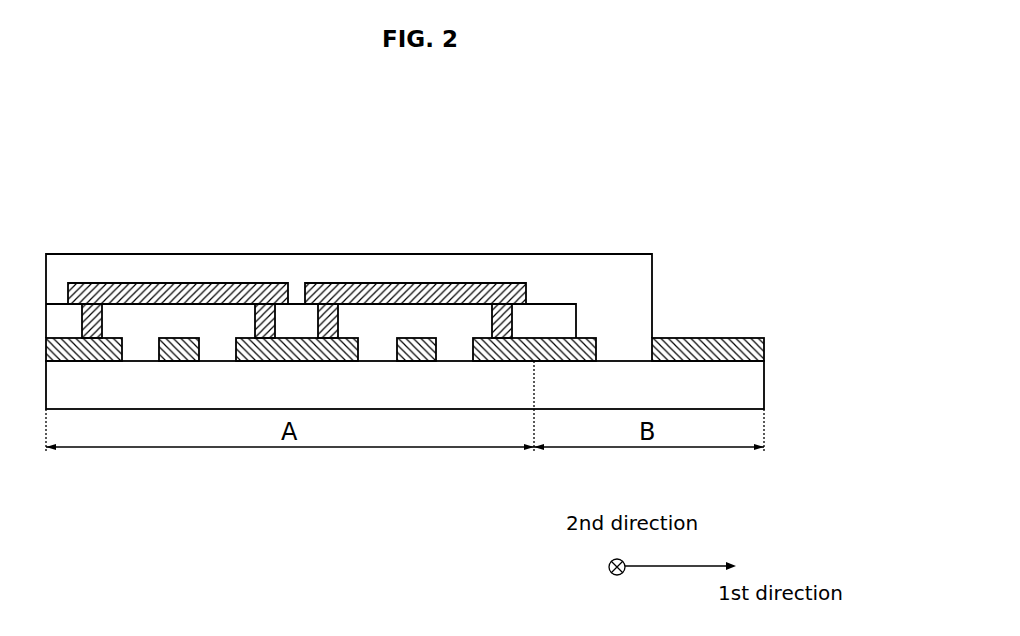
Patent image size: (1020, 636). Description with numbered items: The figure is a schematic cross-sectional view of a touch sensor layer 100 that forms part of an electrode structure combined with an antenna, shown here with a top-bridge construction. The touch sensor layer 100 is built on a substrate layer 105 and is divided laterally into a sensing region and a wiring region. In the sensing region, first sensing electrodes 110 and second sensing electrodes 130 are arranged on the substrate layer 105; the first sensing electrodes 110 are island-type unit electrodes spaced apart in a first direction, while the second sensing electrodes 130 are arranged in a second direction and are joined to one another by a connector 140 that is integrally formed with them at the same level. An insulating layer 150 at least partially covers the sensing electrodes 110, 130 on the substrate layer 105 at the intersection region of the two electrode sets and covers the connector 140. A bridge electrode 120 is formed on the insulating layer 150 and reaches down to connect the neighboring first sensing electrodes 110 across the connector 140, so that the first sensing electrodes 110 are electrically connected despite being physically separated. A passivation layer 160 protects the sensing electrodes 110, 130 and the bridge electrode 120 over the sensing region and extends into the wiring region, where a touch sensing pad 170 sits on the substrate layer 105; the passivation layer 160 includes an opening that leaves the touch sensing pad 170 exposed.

The touch sensor layer 100 is at (89, 143).
The substrate layer 105 is at (766, 380).
The first sensing electrode 110 is at (303, 337).
The bridge electrode 120 is at (390, 283).
The second sensing electrode 130 is at (187, 337).
The connector 140 is at (304, 278).
The insulating layer 150 is at (470, 317).
The passivation layer 160 is at (603, 267).
The touch sensing pad 170 is at (764, 340).